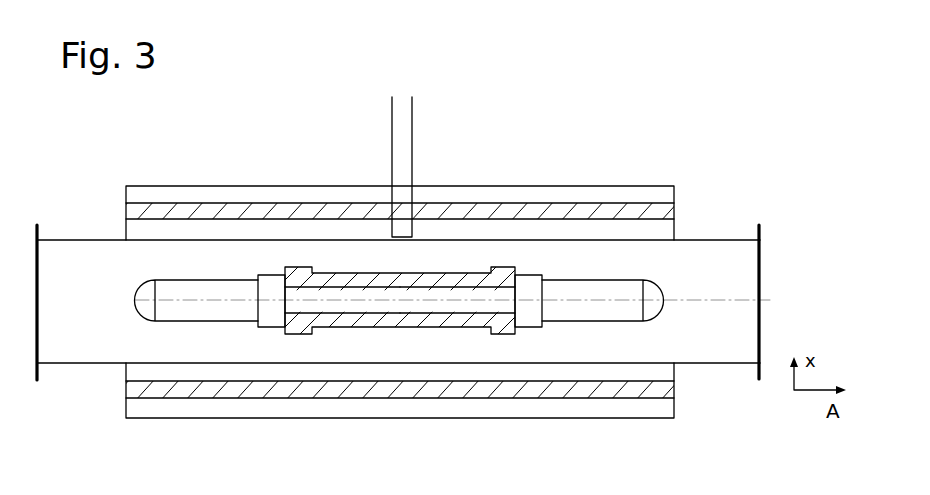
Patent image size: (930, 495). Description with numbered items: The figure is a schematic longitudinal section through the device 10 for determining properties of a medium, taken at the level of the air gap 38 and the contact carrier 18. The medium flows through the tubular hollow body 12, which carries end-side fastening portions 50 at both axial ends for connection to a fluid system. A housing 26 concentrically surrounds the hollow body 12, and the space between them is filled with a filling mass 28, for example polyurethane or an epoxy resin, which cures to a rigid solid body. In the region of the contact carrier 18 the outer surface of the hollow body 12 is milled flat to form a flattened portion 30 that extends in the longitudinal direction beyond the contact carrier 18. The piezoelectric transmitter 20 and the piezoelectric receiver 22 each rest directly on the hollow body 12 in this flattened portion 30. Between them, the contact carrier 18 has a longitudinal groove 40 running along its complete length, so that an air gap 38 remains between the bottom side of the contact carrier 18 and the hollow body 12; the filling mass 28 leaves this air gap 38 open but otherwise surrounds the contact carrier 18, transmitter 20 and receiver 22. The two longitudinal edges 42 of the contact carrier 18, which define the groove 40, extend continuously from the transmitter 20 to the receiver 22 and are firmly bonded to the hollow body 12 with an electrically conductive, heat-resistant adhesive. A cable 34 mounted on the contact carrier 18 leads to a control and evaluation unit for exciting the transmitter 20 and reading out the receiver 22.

The device 10 is at (689, 82).
The tubular hollow body 12 is at (720, 266).
The contact carrier 18 is at (510, 328).
The piezoelectric transmitter 20 is at (268, 284).
The piezoelectric receiver 22 is at (530, 283).
The housing 26 is at (636, 211).
The filling mass 28 is at (316, 226).
The flattened portion 30 is at (630, 303).
The cable 34 is at (404, 105).
The air gap 38 is at (298, 303).
The longitudinal groove 40 is at (480, 311).
The longitudinal edges 42 is at (340, 321).
The end-side fastening portions 50 is at (37, 228).